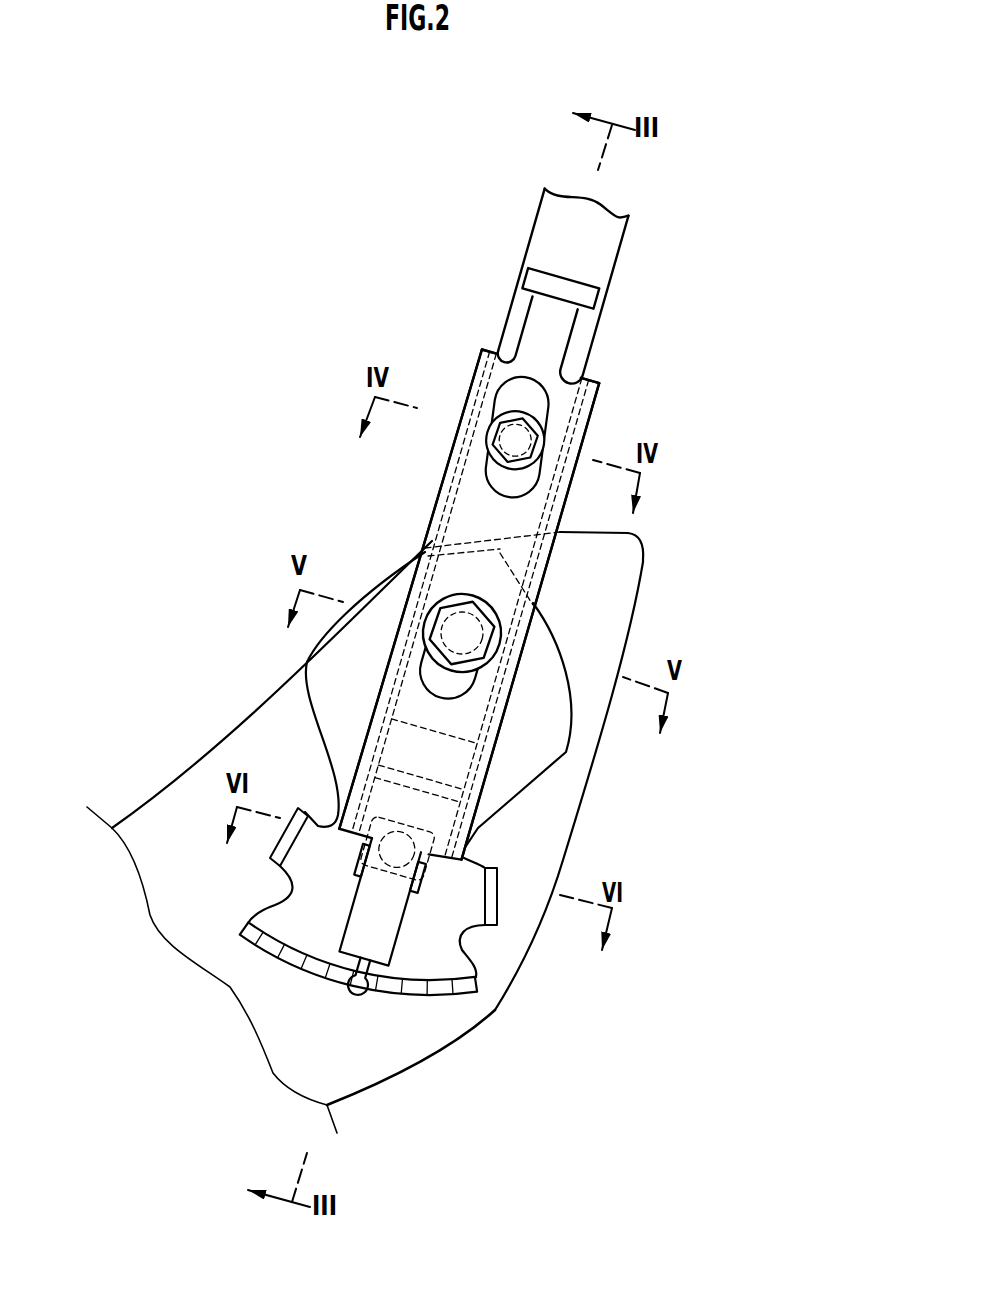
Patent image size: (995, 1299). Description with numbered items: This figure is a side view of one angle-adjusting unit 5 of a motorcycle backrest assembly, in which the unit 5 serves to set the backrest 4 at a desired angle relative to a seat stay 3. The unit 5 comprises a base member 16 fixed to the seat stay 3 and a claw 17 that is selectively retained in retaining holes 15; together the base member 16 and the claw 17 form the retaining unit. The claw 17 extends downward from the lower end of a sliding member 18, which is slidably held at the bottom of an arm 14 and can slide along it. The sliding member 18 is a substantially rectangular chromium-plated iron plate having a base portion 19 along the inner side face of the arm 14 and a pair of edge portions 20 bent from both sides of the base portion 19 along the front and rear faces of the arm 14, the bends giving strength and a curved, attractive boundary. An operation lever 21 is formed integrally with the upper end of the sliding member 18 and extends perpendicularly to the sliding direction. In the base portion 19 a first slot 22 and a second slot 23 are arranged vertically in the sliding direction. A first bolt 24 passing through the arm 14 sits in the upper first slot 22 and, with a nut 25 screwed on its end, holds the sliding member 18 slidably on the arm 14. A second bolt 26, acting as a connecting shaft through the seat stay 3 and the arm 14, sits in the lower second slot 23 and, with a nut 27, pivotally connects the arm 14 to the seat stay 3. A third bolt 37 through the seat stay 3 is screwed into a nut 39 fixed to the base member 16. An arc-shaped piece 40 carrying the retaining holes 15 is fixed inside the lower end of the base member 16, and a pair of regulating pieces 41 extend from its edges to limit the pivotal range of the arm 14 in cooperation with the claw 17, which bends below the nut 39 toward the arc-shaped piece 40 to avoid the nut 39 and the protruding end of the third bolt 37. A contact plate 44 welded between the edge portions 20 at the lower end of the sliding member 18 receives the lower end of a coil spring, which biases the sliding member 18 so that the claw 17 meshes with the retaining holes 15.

The seat stay 3 is at (373, 1068).
The backrest 4 is at (519, 226).
The angle-adjusting unit 5 is at (428, 378).
The arm 14 is at (621, 251).
The retaining holes 15 is at (447, 990).
The base member 16 is at (585, 756).
The claw 17 is at (396, 923).
The sliding member 18 is at (599, 404).
The base portion 19 is at (513, 517).
The edge portions 20 is at (425, 531).
The operation lever 21 is at (587, 278).
The first slot 22 is at (546, 398).
The second slot 23 is at (460, 683).
The first bolt 24 is at (553, 441).
The nut 25 is at (486, 462).
The second bolt 26 is at (423, 629).
The nut 27 is at (500, 633).
The third bolt 37 is at (378, 850).
The nut 39 is at (423, 882).
The arc-shaped piece 40 is at (480, 980).
The regulating pieces 41 is at (270, 860).
The contact plate 44 is at (484, 768).